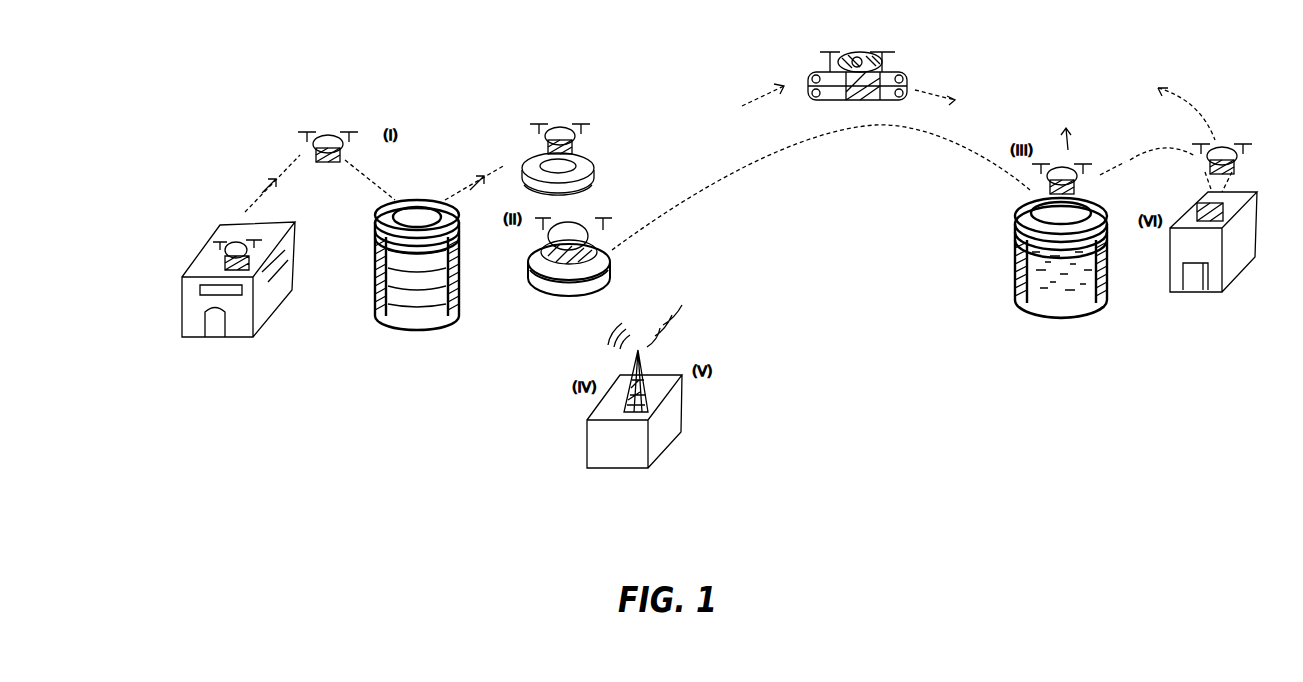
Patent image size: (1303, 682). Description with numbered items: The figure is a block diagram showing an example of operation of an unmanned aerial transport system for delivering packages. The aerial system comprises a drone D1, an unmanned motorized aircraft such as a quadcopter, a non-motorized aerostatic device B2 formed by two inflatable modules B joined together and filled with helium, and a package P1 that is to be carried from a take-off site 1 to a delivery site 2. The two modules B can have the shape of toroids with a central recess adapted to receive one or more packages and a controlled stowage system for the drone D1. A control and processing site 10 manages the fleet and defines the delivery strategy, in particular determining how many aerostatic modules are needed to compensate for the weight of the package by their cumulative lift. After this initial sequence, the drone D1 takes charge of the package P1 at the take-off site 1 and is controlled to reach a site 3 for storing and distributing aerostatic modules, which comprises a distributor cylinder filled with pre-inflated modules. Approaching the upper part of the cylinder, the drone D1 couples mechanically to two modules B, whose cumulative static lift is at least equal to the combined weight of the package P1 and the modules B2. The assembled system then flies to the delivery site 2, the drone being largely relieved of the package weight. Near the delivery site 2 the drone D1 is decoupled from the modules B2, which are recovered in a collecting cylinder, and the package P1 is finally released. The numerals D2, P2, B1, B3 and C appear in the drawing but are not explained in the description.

The take-off site 1 is at (180, 318).
The delivery site 2 is at (1232, 262).
The site for storing and distributing aerostatic modules 3 is at (378, 270).
The control and processing site 10 is at (587, 435).
The drone D1 is at (352, 170).
The second drone D2 is at (1252, 158).
The package P1 is at (195, 262).
The second package P2 is at (1197, 212).
The first battery B1 is at (839, 87).
The non-motorized aerostatic device B2 is at (596, 158).
The third battery B3 is at (590, 312).
The inflatable module B is at (1107, 250).
The container C is at (594, 178).